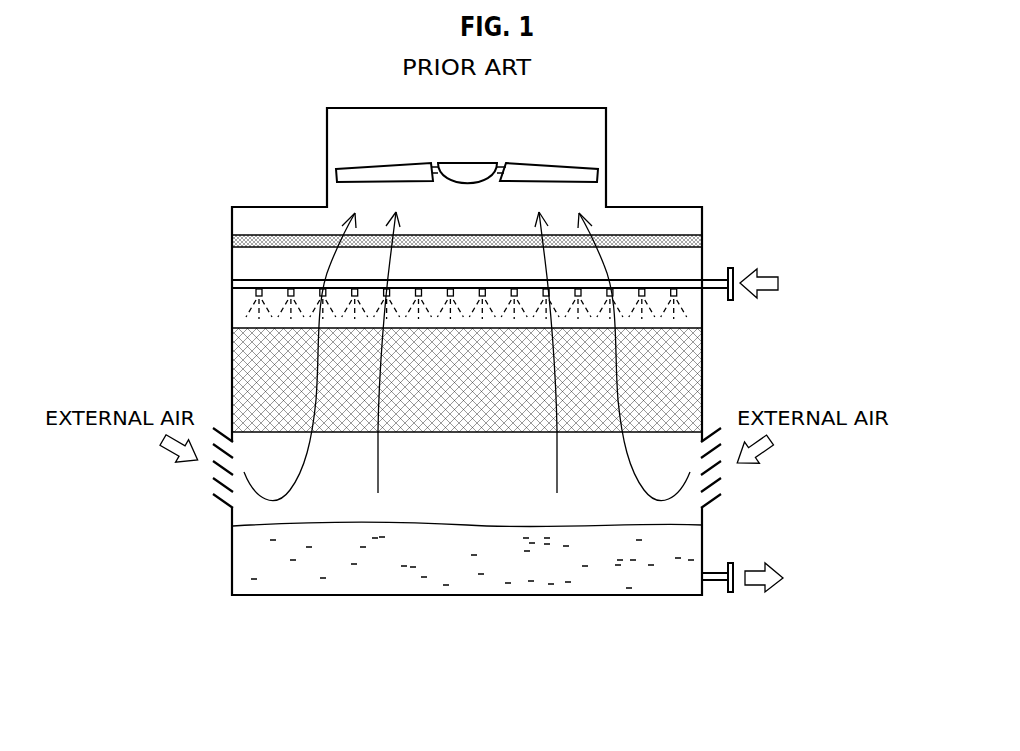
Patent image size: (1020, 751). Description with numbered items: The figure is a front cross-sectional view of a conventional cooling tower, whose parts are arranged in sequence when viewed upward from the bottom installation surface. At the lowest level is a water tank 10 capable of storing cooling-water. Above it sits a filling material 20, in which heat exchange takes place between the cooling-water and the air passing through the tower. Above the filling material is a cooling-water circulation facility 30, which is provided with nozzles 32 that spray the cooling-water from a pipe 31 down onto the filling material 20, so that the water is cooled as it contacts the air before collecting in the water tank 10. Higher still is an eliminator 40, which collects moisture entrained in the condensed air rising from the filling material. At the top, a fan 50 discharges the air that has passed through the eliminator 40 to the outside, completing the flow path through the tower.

The water tank 10 is at (238, 566).
The filling material 20 is at (242, 372).
The cooling-water circulation facility 30 is at (727, 603).
The pipe 31 is at (247, 280).
The nozzles 32 is at (256, 292).
The eliminator 40 is at (697, 243).
The fan 50 is at (558, 172).